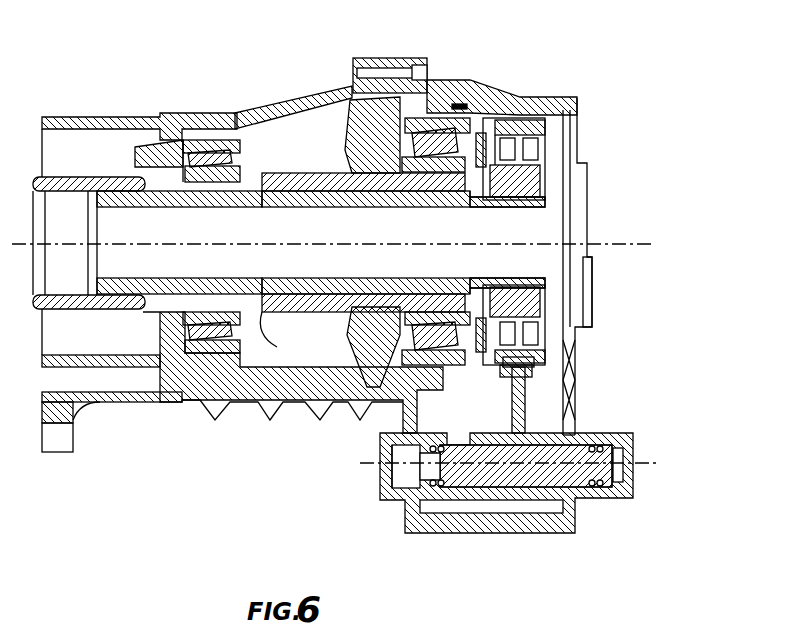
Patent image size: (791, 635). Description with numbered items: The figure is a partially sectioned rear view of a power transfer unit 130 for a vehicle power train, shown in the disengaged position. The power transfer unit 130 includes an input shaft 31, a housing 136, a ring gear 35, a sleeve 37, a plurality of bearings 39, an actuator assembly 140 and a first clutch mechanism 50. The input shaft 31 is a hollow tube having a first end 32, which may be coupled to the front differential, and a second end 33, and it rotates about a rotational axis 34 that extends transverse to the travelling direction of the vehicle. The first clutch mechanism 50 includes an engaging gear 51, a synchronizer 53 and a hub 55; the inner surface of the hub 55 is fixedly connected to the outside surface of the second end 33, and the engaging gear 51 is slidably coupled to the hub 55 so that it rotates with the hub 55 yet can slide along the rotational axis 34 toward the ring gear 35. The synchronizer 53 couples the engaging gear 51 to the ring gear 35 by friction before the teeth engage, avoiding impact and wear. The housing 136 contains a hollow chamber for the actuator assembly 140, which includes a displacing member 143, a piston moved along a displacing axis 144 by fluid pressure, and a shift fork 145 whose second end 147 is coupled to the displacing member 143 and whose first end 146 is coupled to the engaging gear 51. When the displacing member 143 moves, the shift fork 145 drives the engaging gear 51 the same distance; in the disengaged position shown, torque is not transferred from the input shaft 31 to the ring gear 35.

The input shaft 31 is at (366, 242).
The first end 32 is at (147, 243).
The second end 33 is at (507, 242).
The rotational axis 34 is at (612, 243).
The ring gear 35 is at (363, 92).
The sleeve 37 is at (262, 317).
The bearings 39 is at (175, 187).
The first clutch mechanism 50 is at (540, 180).
The engaging gear 51 is at (535, 360).
The synchronizer 53 is at (540, 327).
The hub 55 is at (527, 178).
The power transfer unit 130 is at (113, 487).
The housing 136 is at (487, 97).
The actuator assembly 140 is at (600, 513).
The displacing member 143 is at (420, 472).
The displacing axis 144 is at (650, 463).
The shift fork 145 is at (512, 423).
The first end 146 is at (520, 373).
The second end 147 is at (510, 493).